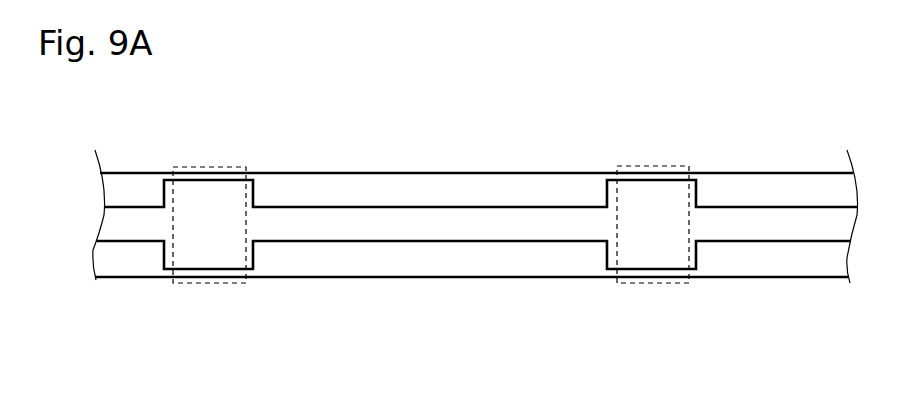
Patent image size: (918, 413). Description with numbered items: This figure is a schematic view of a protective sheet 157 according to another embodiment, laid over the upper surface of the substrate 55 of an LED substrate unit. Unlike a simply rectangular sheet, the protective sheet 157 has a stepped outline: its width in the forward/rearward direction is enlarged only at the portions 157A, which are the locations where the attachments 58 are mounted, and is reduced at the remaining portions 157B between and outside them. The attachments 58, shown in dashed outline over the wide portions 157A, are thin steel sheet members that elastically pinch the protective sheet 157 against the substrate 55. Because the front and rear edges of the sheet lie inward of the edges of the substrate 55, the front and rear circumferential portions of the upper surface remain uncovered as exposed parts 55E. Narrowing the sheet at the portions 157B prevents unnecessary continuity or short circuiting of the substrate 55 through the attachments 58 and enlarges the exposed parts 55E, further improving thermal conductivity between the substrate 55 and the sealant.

The substrate 55 is at (475, 261).
The exposed parts 55E is at (405, 196).
The attachments 58 is at (213, 283).
The protective sheet 157 is at (335, 228).
The enlarged-width portions of protective sheet 157A is at (165, 135).
The reduced-width portions of protective sheet 157B is at (605, 135).